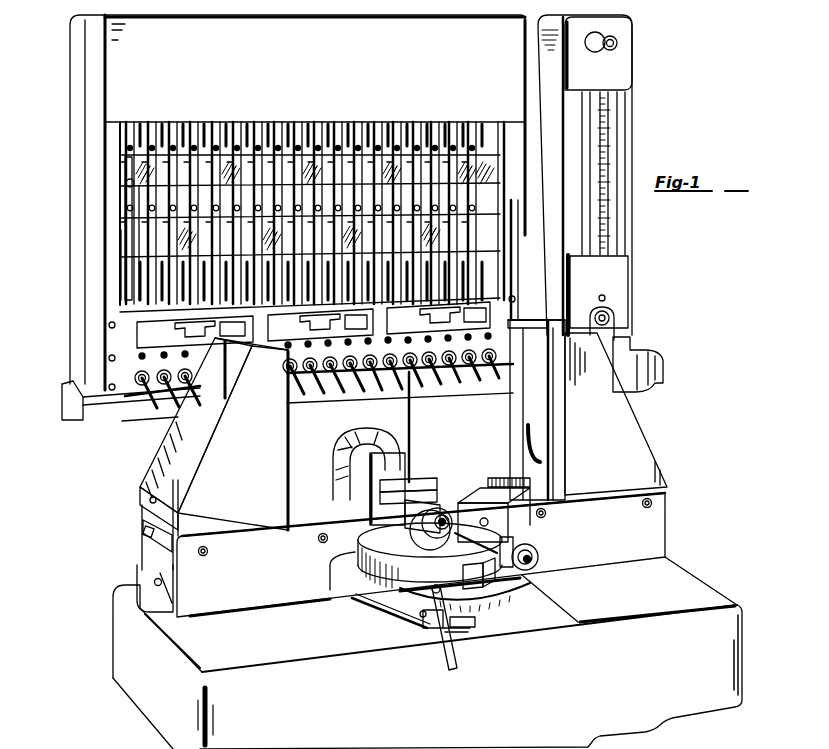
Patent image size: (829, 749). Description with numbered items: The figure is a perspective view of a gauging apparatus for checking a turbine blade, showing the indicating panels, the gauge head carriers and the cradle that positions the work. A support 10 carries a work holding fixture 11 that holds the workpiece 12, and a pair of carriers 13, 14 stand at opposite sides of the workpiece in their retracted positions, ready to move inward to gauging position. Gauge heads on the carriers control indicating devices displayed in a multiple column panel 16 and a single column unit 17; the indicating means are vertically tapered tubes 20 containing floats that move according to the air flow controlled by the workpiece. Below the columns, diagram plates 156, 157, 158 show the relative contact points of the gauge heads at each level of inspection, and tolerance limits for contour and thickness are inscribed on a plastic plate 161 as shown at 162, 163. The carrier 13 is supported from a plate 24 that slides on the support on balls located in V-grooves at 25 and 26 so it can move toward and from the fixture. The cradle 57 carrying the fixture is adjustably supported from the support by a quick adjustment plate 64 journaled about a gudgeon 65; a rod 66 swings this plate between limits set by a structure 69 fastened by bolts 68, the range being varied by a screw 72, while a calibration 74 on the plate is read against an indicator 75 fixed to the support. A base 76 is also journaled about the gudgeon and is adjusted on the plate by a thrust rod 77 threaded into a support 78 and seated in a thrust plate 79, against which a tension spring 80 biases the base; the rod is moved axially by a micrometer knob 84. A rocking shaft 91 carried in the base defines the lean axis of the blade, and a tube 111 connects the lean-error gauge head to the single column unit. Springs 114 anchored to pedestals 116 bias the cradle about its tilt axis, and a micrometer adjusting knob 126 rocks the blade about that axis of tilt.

The support 10 is at (125, 636).
The work holding fixture 11 is at (425, 481).
The workpiece 12 is at (412, 411).
The carrier 13 is at (214, 434).
The carrier 14 is at (587, 410).
The multiple column panel 16 is at (142, 78).
The single column unit 17 is at (618, 65).
The vertically tapered tubes 20 is at (597, 117).
The plate 24 is at (157, 537).
The V-grooves 25 is at (146, 527).
The V-grooves 26 is at (181, 554).
The cradle 57 is at (441, 528).
The quick adjustment plate 64 is at (393, 606).
The gudgeon 65 is at (342, 557).
The rod 66 is at (446, 663).
The bolts 68 is at (477, 618).
The structure 69 is at (462, 630).
The screw 72 is at (418, 620).
The calibration 74 is at (487, 594).
The indicator 75 is at (454, 594).
The base 76 is at (340, 460).
The thrust rod 77 is at (528, 536).
The support 78 is at (508, 582).
The thrust plate 79 is at (492, 520).
The tension spring 80 is at (477, 558).
The micrometer knob 84 is at (541, 557).
The rocking shaft 91 is at (405, 493).
The tube 111 is at (613, 322).
The springs 114 is at (396, 565).
The pedestals 116 is at (330, 538).
The micrometer adjusting knob 126 is at (445, 512).
The diagram plate 156 is at (195, 332).
The diagram plate 157 is at (320, 325).
The diagram plate 158 is at (438, 318).
The plastic plate 161 is at (123, 167).
The tolerance limits 162 is at (160, 192).
The tolerance limits 163 is at (122, 242).